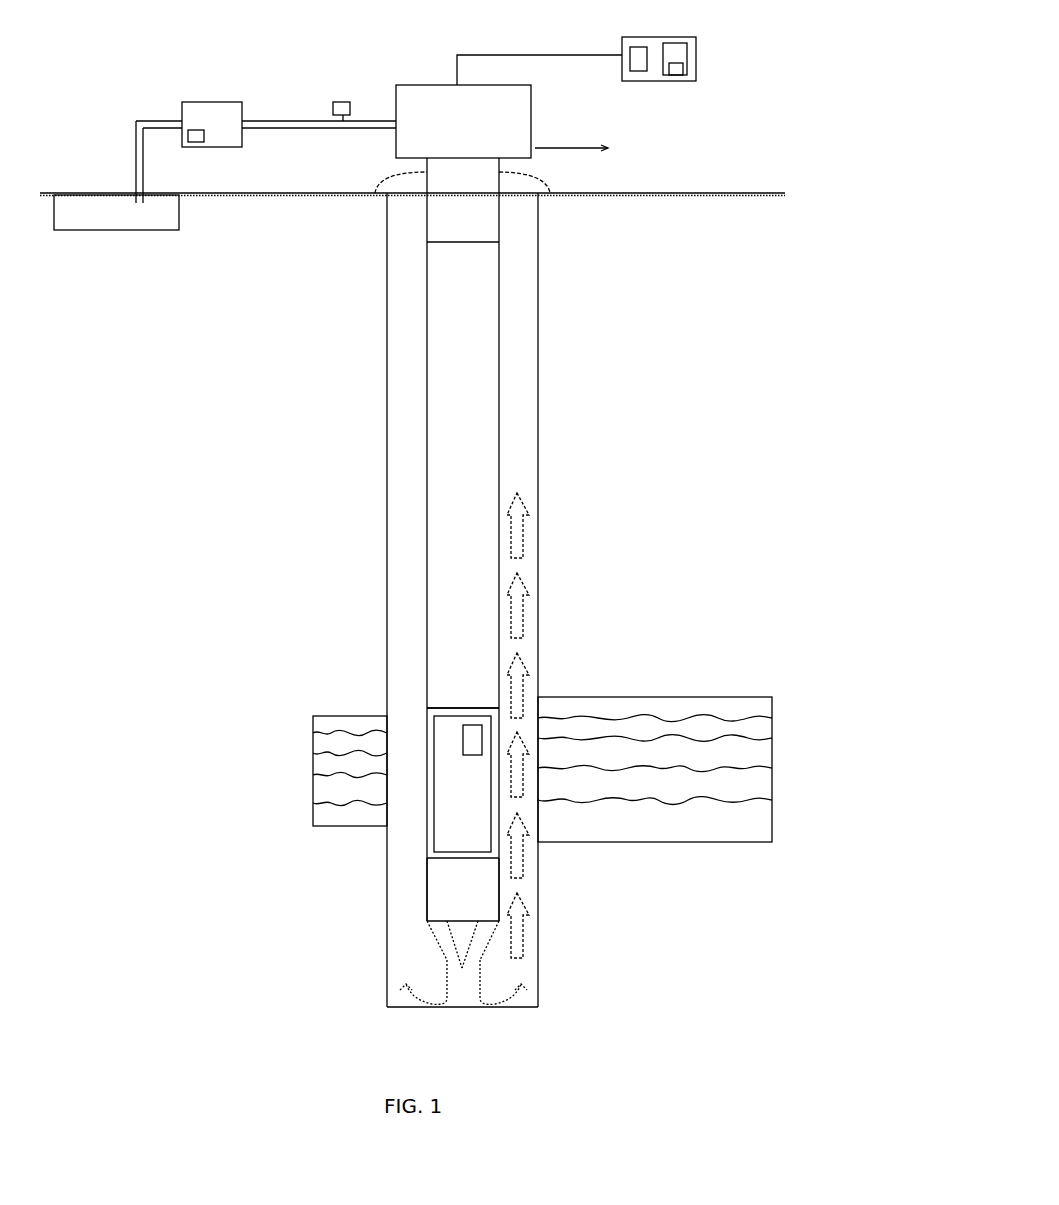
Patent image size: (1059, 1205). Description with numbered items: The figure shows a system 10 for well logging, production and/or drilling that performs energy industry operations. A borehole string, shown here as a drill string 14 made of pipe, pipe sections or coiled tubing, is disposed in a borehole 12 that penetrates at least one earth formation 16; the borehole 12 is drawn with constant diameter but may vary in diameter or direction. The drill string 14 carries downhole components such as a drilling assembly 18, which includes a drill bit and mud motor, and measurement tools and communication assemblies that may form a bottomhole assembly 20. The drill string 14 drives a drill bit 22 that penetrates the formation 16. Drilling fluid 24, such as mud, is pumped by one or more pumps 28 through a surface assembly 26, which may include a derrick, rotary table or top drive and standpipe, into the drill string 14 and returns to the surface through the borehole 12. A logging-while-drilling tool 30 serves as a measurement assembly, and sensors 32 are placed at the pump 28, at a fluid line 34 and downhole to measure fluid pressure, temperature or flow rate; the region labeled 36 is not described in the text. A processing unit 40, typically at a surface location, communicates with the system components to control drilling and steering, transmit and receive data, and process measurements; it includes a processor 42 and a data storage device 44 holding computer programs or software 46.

The system 10 is at (80, 31).
The borehole 12 is at (398, 358).
The drill string 14 is at (483, 216).
The earth formation 16 is at (605, 727).
The drilling assembly 18 is at (443, 908).
The bottomhole assembly 20 is at (417, 842).
The drill bit 22 is at (433, 938).
The drilling fluid 24 is at (105, 215).
The surface assembly 26 is at (502, 121).
The pump 28 is at (212, 112).
The logging-while-drilling tool 30 is at (443, 788).
The sensor 32 is at (200, 140).
The fluid line 34 is at (303, 123).
The wellbore 36 is at (219, 351).
The processing unit 40 is at (695, 43).
The processor 42 is at (637, 67).
The data storage device 44 is at (664, 77).
The computer programs or software 46 is at (680, 72).